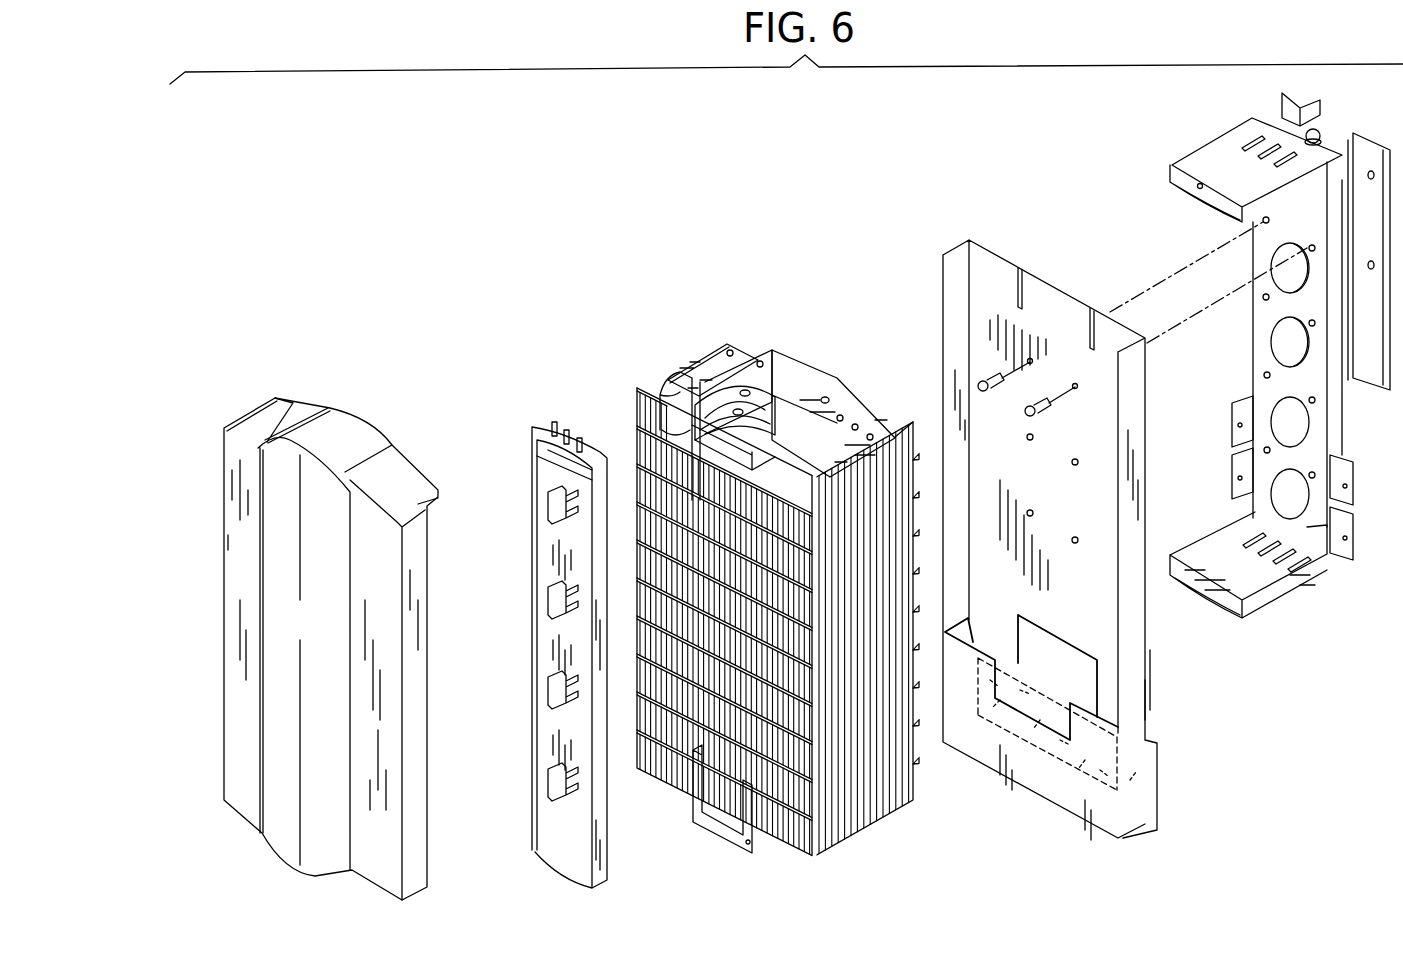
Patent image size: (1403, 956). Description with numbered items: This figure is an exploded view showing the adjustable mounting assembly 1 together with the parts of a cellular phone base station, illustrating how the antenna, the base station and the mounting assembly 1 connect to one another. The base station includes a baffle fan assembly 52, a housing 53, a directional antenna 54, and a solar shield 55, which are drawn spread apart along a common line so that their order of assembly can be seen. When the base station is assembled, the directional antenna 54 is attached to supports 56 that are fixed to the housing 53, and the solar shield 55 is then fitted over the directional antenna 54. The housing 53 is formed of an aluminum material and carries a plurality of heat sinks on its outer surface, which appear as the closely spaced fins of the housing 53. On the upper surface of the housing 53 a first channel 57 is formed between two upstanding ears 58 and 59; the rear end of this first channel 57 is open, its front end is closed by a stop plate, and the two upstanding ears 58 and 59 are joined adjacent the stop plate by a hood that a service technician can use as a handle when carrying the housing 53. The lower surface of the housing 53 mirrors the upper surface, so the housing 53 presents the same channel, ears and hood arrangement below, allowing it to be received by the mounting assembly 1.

The mounting assembly 1 is at (1194, 138).
The baffle fan assembly 52 is at (1141, 806).
The housing 53 is at (683, 331).
The directional antenna 54 is at (549, 548).
The solar shield 55 is at (236, 408).
The supports 56 is at (680, 393).
The first channel 57 is at (823, 357).
The upstanding ear 58 is at (832, 393).
The upstanding ear 59 is at (772, 352).